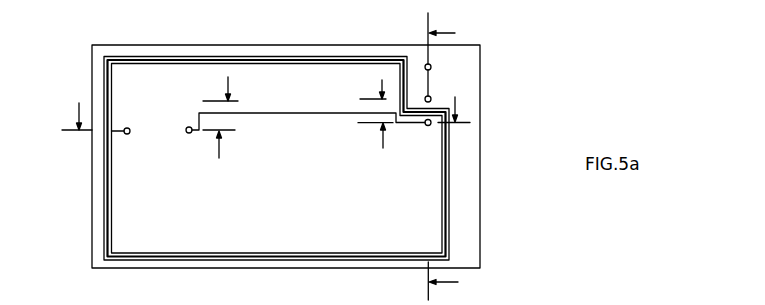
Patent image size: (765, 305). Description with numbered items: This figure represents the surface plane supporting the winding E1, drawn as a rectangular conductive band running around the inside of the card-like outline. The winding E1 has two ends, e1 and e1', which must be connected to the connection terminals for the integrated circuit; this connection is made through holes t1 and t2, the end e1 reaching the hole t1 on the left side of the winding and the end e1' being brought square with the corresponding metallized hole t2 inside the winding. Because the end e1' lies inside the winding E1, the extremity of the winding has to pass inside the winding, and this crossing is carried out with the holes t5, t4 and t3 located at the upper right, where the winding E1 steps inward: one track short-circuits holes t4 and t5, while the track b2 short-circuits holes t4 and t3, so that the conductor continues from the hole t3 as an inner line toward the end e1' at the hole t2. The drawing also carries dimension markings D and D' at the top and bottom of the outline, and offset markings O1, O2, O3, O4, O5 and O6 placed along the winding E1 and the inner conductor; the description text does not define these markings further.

The winding E1 is at (446, 202).
The end of the winding e1 is at (131, 107).
The end of the winding e1' is at (299, 101).
The hole t1 is at (127, 134).
The hole t2 is at (189, 133).
The hole t3 is at (428, 126).
The hole t4 is at (427, 96).
The hole t5 is at (431, 66).
The track of short-circuit b2 is at (428, 80).
The dimension D is at (446, 37).
The dimension D' is at (445, 281).
The offset O1 is at (72, 112).
The offset O2 is at (227, 146).
The offset O3 is at (229, 71).
The offset O4 is at (371, 85).
The offset O5 is at (373, 139).
The offset O6 is at (458, 101).